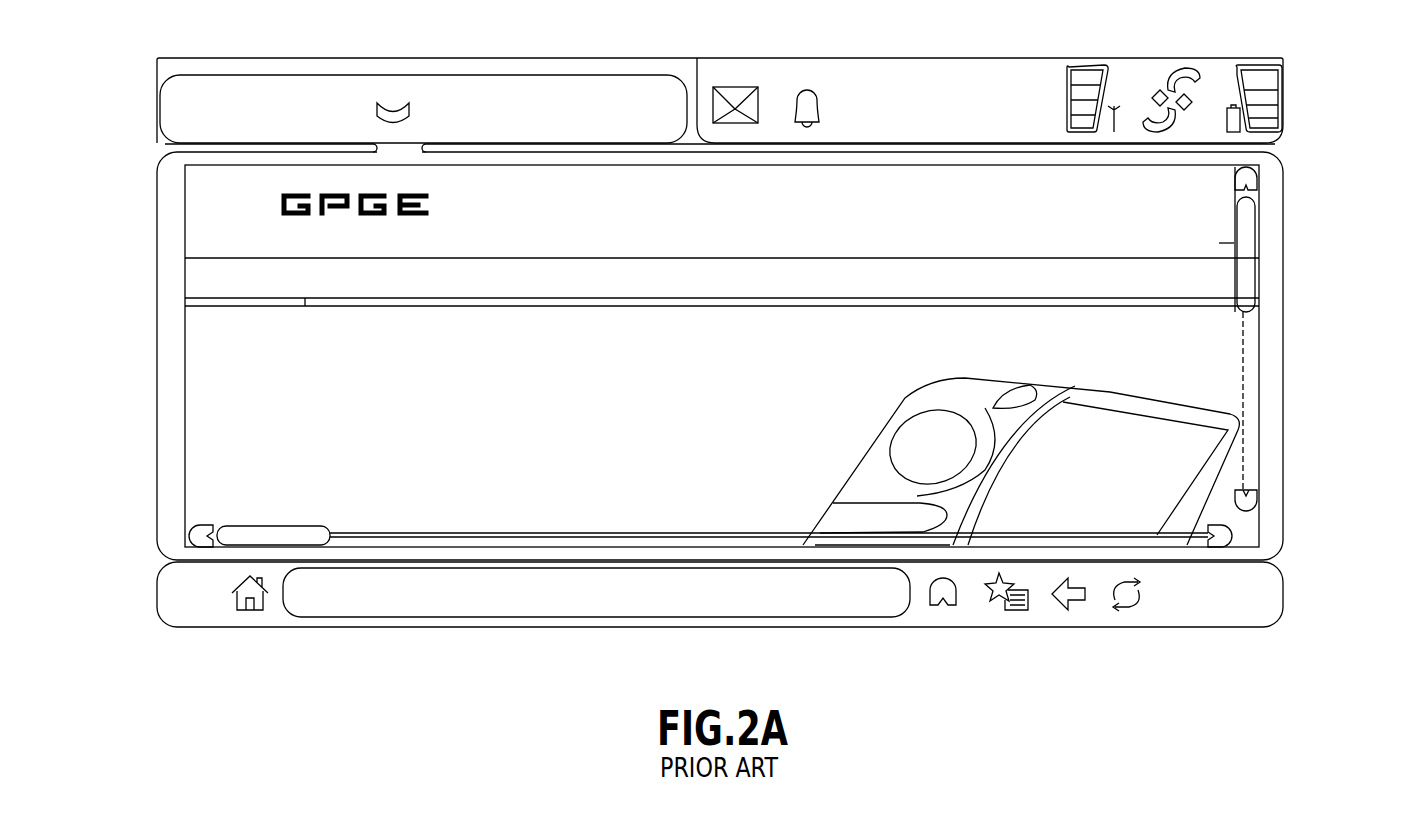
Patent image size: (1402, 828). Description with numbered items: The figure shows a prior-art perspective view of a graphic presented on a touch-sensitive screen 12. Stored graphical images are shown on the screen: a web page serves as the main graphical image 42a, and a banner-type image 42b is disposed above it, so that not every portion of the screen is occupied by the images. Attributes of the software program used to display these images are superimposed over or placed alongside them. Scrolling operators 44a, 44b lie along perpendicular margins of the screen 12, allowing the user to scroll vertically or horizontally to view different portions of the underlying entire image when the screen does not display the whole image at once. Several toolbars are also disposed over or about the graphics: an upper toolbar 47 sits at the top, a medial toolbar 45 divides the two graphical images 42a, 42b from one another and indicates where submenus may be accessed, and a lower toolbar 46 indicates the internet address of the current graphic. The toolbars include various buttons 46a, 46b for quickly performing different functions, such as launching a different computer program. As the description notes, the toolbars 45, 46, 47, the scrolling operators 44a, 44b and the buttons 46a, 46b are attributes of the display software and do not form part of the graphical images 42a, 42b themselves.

The touch-sensitive screen 12 is at (1315, 170).
The upper toolbar 47 is at (145, 57).
The medial toolbar 45 is at (727, 350).
The main graphical image 42a is at (1212, 345).
The banner-type image 42b is at (895, 208).
The scrolling operator 44a is at (1245, 258).
The scrolling operator 44b is at (240, 535).
The lower toolbar 46 is at (616, 619).
The button 46a is at (947, 607).
The button 46b is at (1075, 607).